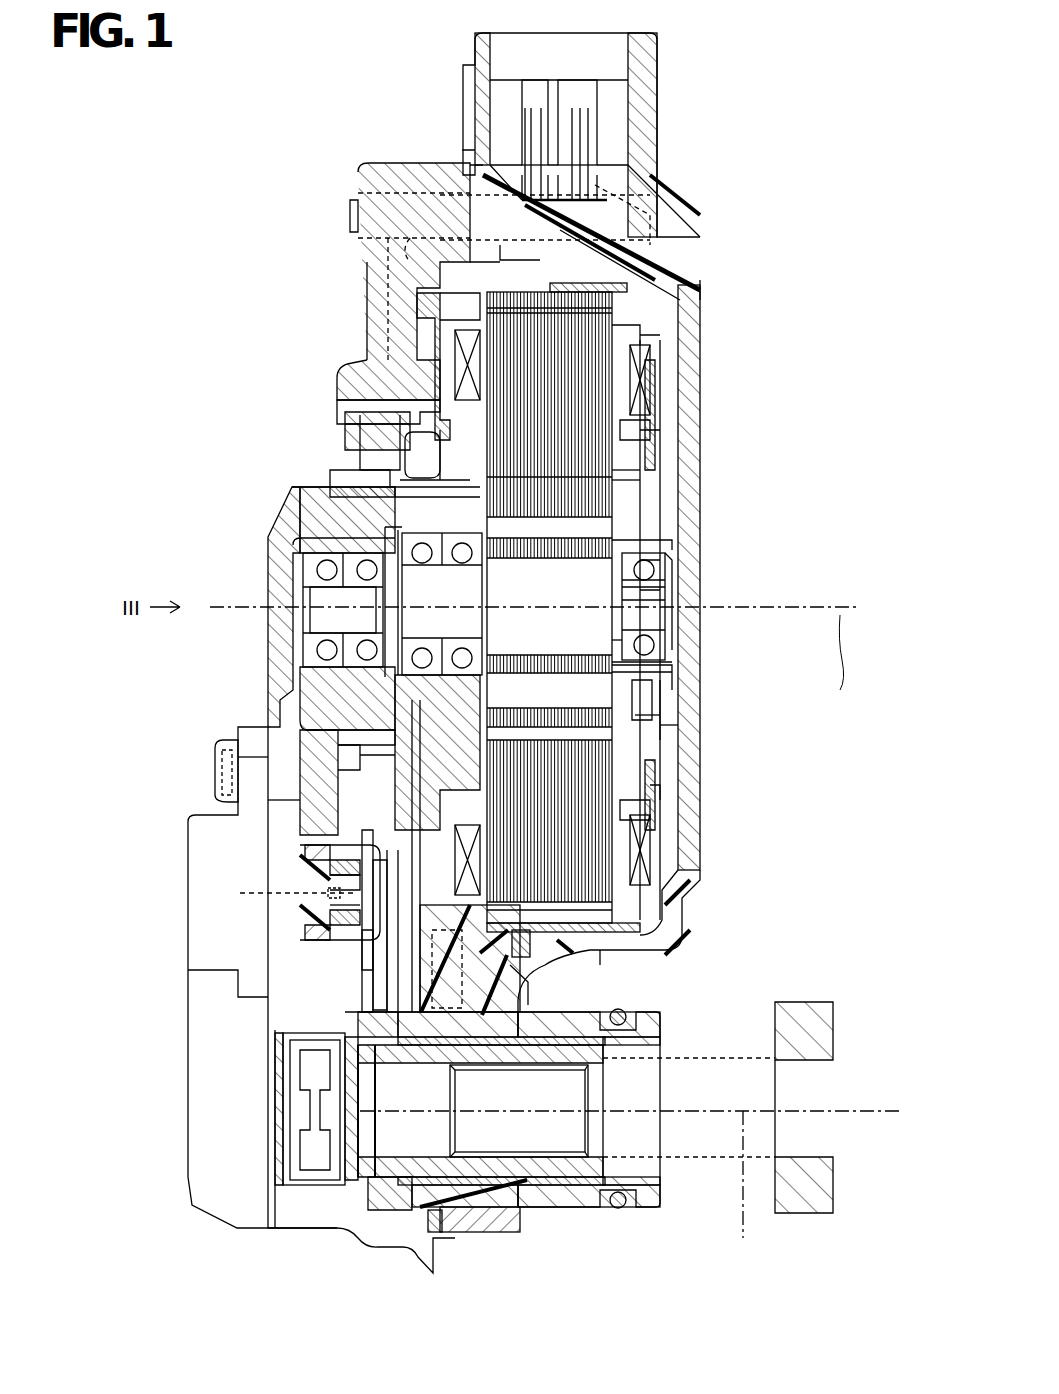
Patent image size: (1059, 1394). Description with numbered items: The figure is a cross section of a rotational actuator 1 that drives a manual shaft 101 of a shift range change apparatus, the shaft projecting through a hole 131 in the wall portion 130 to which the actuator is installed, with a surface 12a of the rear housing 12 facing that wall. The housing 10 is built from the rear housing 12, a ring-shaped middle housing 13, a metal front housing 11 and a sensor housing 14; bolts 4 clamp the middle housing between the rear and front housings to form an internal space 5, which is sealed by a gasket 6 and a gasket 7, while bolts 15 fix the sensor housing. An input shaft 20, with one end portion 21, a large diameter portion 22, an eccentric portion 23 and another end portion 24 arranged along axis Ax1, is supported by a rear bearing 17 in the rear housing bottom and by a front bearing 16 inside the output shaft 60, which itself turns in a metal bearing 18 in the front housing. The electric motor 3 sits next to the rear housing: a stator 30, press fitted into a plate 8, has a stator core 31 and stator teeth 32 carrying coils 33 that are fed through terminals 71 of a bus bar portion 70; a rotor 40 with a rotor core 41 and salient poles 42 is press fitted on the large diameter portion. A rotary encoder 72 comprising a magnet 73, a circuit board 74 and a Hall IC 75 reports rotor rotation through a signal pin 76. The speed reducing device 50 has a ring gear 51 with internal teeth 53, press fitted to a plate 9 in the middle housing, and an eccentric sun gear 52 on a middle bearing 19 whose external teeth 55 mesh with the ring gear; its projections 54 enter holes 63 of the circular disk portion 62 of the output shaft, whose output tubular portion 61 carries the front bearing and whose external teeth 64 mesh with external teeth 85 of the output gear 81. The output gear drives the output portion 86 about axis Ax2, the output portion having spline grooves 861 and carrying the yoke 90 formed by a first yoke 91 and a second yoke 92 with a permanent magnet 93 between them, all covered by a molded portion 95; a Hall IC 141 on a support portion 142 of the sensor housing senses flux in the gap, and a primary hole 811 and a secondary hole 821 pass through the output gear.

The rotational actuator 1 is at (724, 45).
The electric motor 3 is at (637, 485).
The bolts 4 is at (590, 210).
The space 5 is at (625, 470).
The gasket 6 is at (558, 968).
The gasket 7 is at (436, 1235).
The plate 8 is at (600, 955).
The plate 9 is at (524, 972).
The housing 10 is at (554, 1234).
The front housing 11 is at (353, 1232).
The rear housing 12 is at (655, 950).
The surface 12a is at (705, 284).
The middle housing 13 is at (503, 1235).
The sensor housing 14 is at (247, 1222).
The bolts 15 is at (215, 772).
The front bearing 16 is at (322, 580).
The rear bearing 17 is at (648, 573).
The metal bearing 18 is at (285, 492).
The middle bearing 19 is at (400, 545).
The input shaft 20 is at (655, 592).
The one end portion 21 is at (655, 615).
The large diameter portion 22 is at (600, 640).
The eccentric portion 23 is at (322, 648).
The other end portion 24 is at (335, 610).
The stator 30 is at (605, 305).
The stator core 31 is at (612, 335).
The stator teeth 32 is at (595, 395).
The coils 33 is at (640, 372).
The rotor 40 is at (660, 505).
The rotor core 41 is at (640, 662).
The salient poles 42 is at (605, 452).
The speed reducing device 50 is at (406, 373).
The ring gear 51 is at (430, 345).
The sun gear 52 is at (390, 500).
The internal teeth 53 is at (385, 430).
The projections 54 is at (375, 458).
The external teeth 55 is at (415, 405).
The output shaft 60 is at (320, 695).
The output tubular portion 61 is at (320, 720).
The circular disk portion 62 is at (330, 755).
The holes 63 is at (357, 440).
The external teeth 64 is at (300, 805).
The bus bar portion 70 is at (655, 792).
The terminals 71 is at (640, 428).
The rotary encoder 72 is at (665, 735).
The magnet 73 is at (665, 702).
The circuit board 74 is at (650, 722).
The Hall IC 75 is at (652, 690).
The signal pin 76 is at (580, 110).
The output gear 81 is at (390, 1010).
The external teeth 85 is at (300, 770).
The output portion 86 is at (342, 1165).
The yoke 90 is at (300, 860).
The first yoke 91 is at (330, 866).
The second yoke 92 is at (330, 918).
The permanent magnet 93 is at (330, 880).
The molded portion 95 is at (345, 932).
The manual shaft 101 is at (697, 1158).
The wall portion 130 is at (778, 1018).
The hole 131 is at (780, 1150).
The Hall IC 141 is at (240, 893).
The support portion 142 is at (328, 895).
The primary hole 811 is at (378, 990).
The secondary hole 821 is at (365, 955).
The spline grooves 861 is at (560, 1145).
The axis of the input shaft Ax1 is at (535, 658).
The axis of the output portion Ax2 is at (630, 1189).